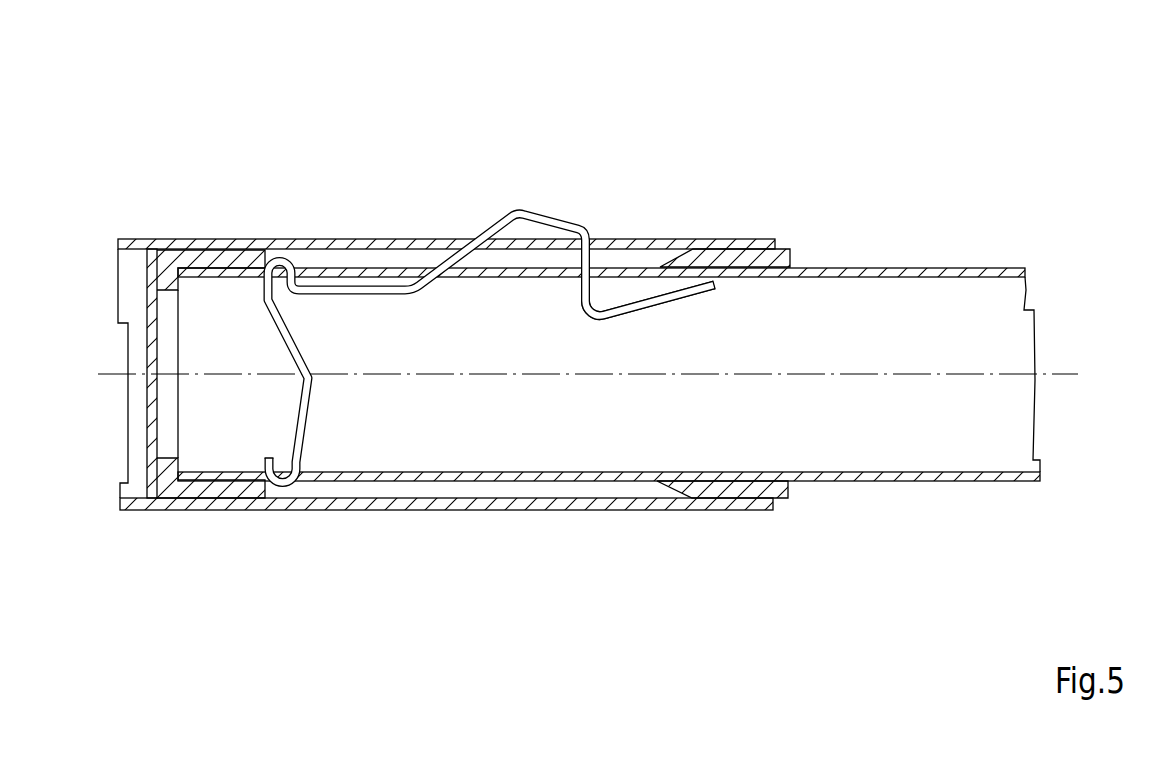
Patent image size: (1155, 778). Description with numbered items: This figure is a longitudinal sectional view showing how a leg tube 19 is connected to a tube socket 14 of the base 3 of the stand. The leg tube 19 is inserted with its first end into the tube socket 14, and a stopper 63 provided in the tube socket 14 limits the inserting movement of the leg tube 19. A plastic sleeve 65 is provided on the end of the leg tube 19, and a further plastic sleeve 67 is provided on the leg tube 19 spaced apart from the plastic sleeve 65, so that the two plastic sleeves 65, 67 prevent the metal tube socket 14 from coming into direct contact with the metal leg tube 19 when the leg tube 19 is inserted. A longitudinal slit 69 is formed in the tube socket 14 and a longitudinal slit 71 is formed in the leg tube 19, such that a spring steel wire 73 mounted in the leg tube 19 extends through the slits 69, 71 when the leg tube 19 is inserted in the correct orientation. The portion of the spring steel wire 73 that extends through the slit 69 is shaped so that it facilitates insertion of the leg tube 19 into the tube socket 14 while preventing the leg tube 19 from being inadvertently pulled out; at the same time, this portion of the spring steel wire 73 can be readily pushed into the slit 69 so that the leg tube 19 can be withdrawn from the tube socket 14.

The base 3 is at (476, 127).
The first tube socket 14 is at (277, 240).
The leg tube 19 is at (925, 481).
The stopper 63 is at (157, 338).
The plastic sleeve 65 is at (175, 478).
The further plastic sleeve 67 is at (785, 498).
The longitudinal slit 69 is at (447, 242).
The longitudinal slit 71 is at (430, 248).
The spring steel wire 73 is at (575, 225).